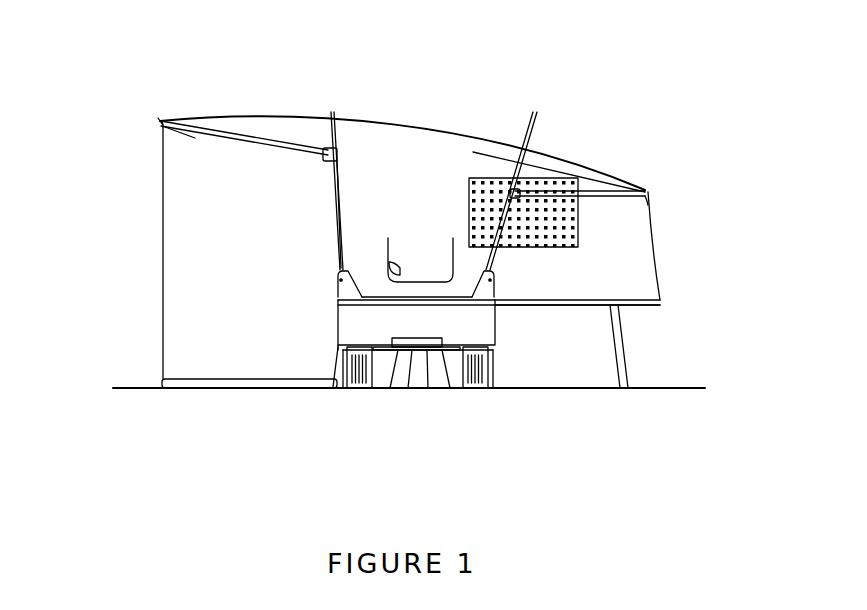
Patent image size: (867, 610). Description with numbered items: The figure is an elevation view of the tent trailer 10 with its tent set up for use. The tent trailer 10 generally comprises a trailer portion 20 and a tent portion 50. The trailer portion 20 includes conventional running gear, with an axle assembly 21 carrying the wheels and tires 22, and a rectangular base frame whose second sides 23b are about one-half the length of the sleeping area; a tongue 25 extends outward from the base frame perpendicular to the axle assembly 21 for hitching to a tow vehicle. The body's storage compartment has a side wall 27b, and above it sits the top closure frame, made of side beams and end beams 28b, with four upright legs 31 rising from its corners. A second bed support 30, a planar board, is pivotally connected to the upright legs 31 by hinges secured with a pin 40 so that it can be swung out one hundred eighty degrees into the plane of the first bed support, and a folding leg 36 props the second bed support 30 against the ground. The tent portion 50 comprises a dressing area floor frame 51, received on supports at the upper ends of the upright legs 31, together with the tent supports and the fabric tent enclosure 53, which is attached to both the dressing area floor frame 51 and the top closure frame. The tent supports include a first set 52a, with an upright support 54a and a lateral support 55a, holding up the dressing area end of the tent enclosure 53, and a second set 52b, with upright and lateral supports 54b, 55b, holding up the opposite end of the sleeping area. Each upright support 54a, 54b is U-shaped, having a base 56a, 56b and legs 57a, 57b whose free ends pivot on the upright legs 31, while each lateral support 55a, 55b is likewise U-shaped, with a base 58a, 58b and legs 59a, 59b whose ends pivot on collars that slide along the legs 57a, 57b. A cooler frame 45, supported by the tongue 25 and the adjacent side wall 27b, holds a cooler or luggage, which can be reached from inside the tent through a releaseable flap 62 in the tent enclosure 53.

The tent trailer 10 is at (490, 83).
The trailer portion 20 is at (513, 345).
The axle assembly 21 is at (442, 350).
The wheels and tires 22 is at (490, 373).
The second sides of base frame 23b is at (495, 338).
The tongue 25 is at (410, 350).
The side wall of storage compartment 27b is at (490, 336).
The end beams 28b is at (383, 302).
The second bed support 30 is at (648, 305).
The upright legs 31 is at (347, 295).
The folding leg 36 is at (623, 362).
The pin 40 is at (490, 296).
The cooler frame 45 is at (397, 350).
The tent portion 50 is at (155, 262).
The dressing area floor frame 51 is at (255, 387).
The first set of tent supports 52a is at (320, 163).
The second set of tent supports 52b is at (528, 172).
The tent enclosure 53 is at (371, 147).
The upright support 54a is at (330, 262).
The upright support 54b is at (510, 167).
The lateral support 55a is at (196, 138).
The lateral support 55b is at (597, 202).
The base of upright 56a is at (333, 118).
The base of upright 56b is at (515, 190).
The legs of upright 57a is at (336, 223).
The legs of upright 57b is at (473, 152).
The base of lateral support 58a is at (162, 120).
The base of lateral support 58b is at (646, 193).
The legs of lateral support 59a is at (273, 140).
The legs of lateral support 59b is at (613, 193).
The releaseable flap 62 is at (405, 273).